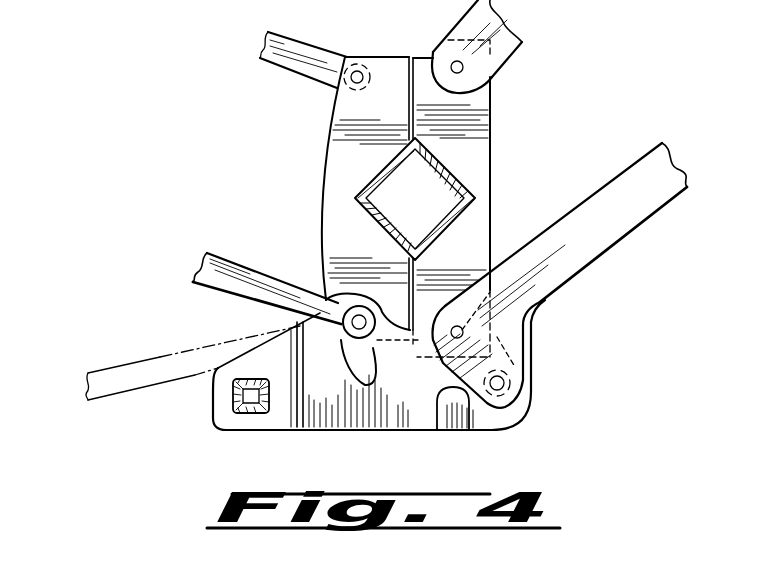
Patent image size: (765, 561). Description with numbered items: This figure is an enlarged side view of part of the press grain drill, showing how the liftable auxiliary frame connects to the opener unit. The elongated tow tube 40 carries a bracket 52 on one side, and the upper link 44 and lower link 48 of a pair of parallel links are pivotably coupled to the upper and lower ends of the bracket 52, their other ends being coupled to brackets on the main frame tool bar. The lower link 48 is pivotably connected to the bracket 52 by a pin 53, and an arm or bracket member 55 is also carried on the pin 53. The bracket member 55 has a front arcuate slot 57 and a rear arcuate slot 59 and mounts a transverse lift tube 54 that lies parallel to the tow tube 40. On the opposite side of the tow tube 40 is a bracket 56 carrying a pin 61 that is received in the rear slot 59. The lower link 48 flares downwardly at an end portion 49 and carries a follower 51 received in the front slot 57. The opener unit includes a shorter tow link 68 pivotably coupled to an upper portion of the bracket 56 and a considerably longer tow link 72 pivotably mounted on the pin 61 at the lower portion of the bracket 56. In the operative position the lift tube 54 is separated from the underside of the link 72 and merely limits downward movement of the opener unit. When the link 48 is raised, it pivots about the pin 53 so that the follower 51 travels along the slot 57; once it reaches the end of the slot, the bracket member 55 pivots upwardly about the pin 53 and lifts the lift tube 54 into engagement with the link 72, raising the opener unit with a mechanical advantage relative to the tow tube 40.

The tow tube 40 is at (477, 200).
The upper link 44 is at (507, 48).
The lower link 48 is at (620, 234).
The end portion 49 is at (512, 350).
The follower 51 is at (525, 383).
The bracket 52 is at (478, 159).
The pin 53 is at (463, 332).
The lift tube 54 is at (240, 415).
The bracket member 55 is at (408, 438).
The bracket 56 is at (328, 200).
The front arcuate slot 57 is at (455, 404).
The rear arcuate slot 59 is at (354, 357).
The pin 61 is at (349, 318).
The tow link 68 is at (262, 57).
The tow link 72 is at (223, 287).